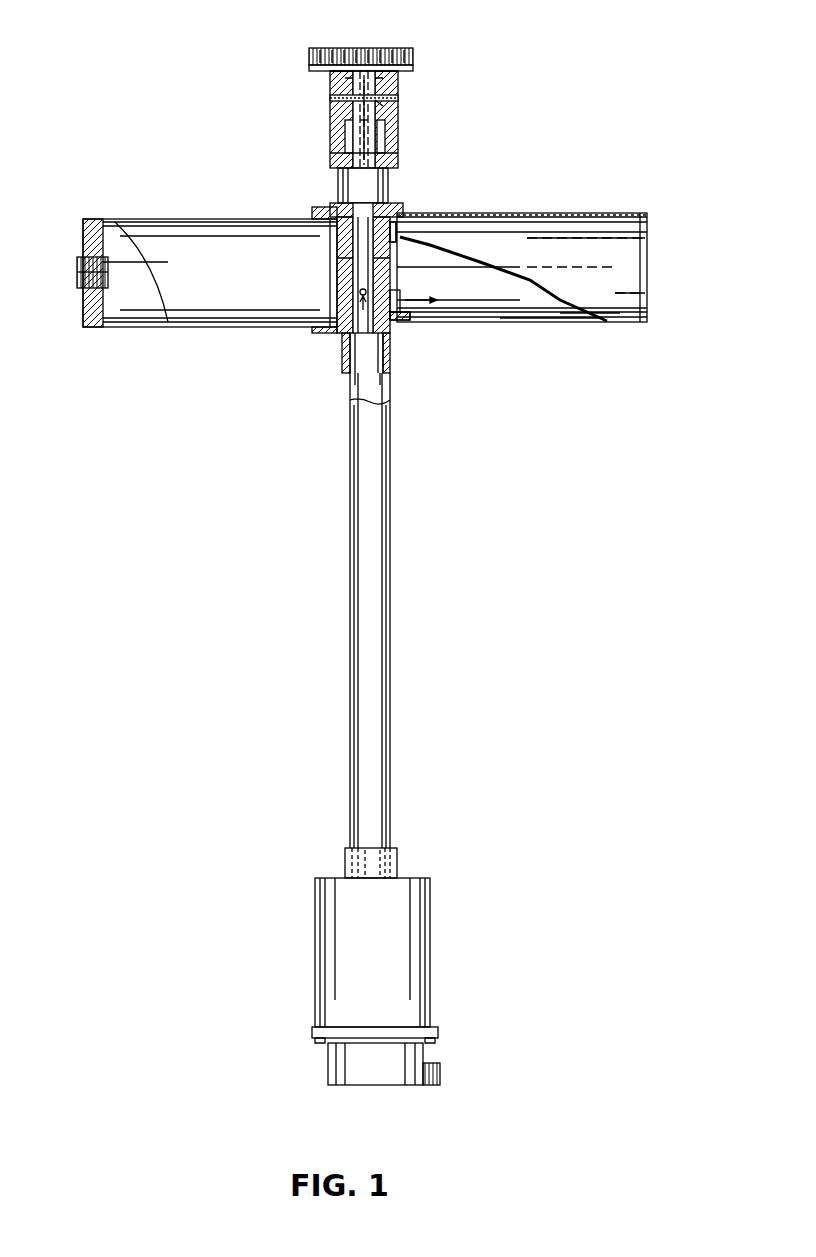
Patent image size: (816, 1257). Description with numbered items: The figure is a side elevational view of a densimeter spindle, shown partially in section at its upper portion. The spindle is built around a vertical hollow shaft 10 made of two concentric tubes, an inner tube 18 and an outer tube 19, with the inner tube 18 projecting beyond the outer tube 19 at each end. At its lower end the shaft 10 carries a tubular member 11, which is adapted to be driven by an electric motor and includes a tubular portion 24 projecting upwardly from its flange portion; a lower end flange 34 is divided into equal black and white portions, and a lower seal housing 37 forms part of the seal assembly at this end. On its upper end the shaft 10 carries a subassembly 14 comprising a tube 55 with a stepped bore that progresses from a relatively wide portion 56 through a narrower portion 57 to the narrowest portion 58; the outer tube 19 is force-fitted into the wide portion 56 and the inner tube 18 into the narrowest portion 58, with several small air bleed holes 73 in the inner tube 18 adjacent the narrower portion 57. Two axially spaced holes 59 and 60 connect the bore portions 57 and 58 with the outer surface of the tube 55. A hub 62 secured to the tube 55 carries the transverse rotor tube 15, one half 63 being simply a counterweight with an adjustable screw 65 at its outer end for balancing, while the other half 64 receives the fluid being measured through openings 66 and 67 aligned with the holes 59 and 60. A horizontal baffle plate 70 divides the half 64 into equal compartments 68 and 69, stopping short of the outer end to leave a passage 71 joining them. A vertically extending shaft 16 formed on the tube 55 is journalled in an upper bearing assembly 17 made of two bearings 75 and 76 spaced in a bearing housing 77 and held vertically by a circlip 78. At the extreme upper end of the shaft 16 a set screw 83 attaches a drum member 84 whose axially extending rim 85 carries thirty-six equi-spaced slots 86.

The vertical hollow shaft 10 is at (350, 806).
The tubular member 11 is at (315, 950).
The subassembly 14 is at (392, 180).
The transverse rotor tube 15 is at (598, 213).
The vertically extending shaft 16 is at (366, 140).
The upper bearing assembly 17 is at (330, 134).
The inner tube 18 is at (352, 375).
The outer tube 19 is at (358, 395).
The tubular portion 24 is at (345, 866).
The lower end flange 34 is at (328, 1045).
The lower seal housing 37 is at (423, 1070).
The tube 55 is at (346, 345).
The wide portion 56 is at (345, 365).
The narrower portion 57 is at (342, 333).
The narrowest portion 58 is at (355, 270).
The hole 59 is at (392, 320).
The hole 60 is at (397, 230).
The hub 62 is at (400, 320).
The counterweight half 63 is at (136, 327).
The fluid-receiving half 64 is at (545, 213).
The adjustable screw 65 is at (77, 272).
The opening 66 is at (415, 322).
The opening 67 is at (417, 232).
The compartment 68 is at (575, 322).
The compartment 69 is at (475, 245).
The baffle plate 70 is at (515, 322).
The passage 71 is at (630, 258).
The air bleed holes 73 is at (340, 250).
The bearing 75 is at (330, 158).
The bearing 76 is at (398, 103).
The bearing housing 77 is at (398, 127).
The circlip 78 is at (398, 92).
The set screw 83 is at (330, 98).
The drum member 84 is at (330, 78).
The rim 85 is at (330, 48).
The slots 86 is at (380, 47).